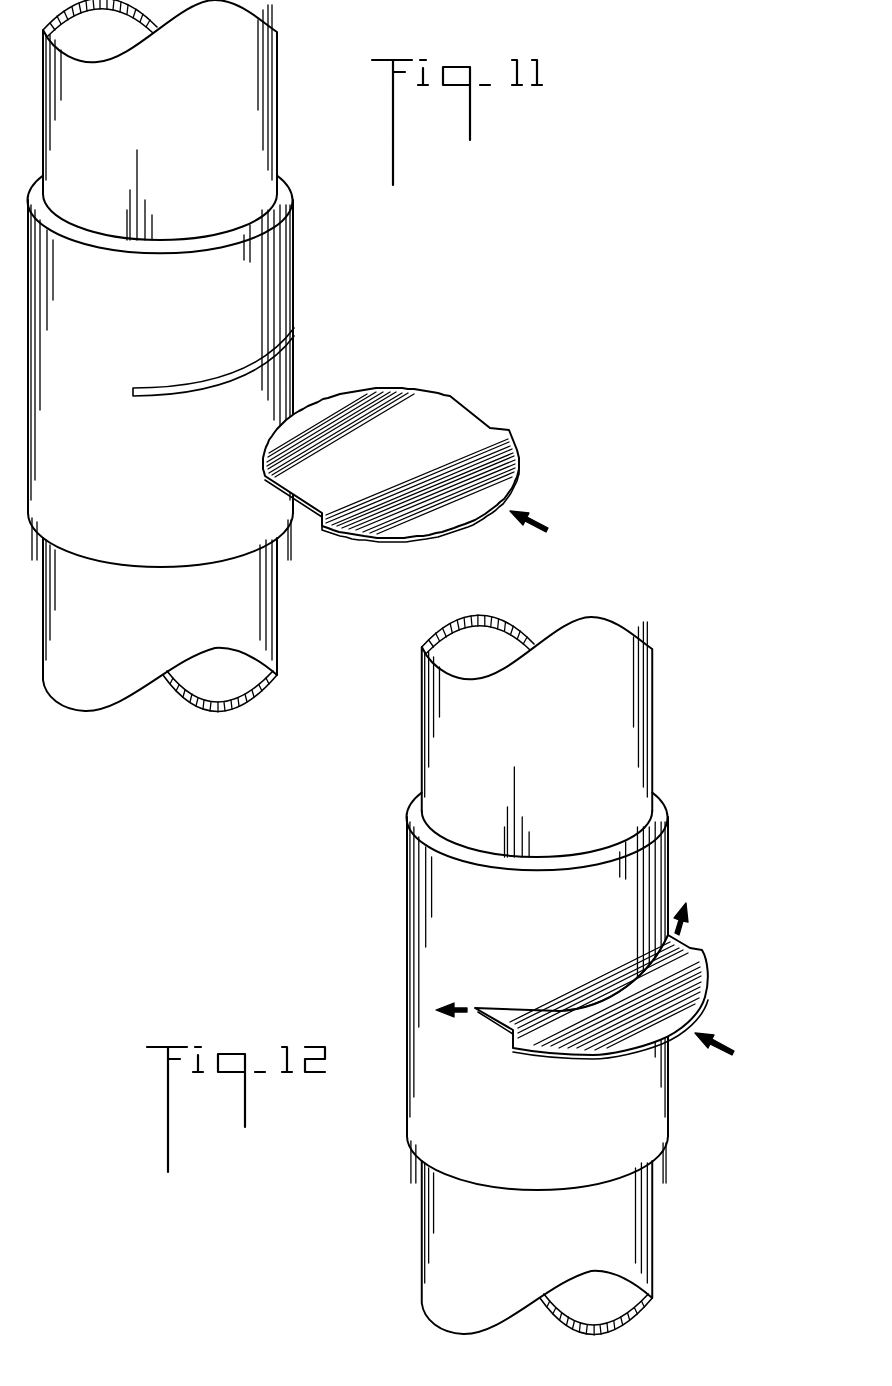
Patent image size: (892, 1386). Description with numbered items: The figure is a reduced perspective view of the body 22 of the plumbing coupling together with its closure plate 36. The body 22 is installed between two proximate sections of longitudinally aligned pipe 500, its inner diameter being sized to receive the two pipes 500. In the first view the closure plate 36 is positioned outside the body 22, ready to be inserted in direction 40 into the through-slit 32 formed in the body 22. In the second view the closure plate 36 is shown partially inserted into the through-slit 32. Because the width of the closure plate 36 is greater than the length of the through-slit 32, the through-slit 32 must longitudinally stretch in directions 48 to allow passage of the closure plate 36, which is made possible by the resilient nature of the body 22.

In FIG. 11, the pipe 500 is at (278, 122).
In FIG. 12, the pipe 500 is at (652, 745).
In FIG. 11, the body 22 is at (327, 280).
In FIG. 12, the body 22 is at (700, 826).
In FIG. 11, the through-slit 32 is at (248, 378).
In FIG. 12, the through-slit 32 is at (525, 1013).
In FIG. 11, the closure plate 36 is at (433, 440).
In FIG. 12, the closure plate 36 is at (688, 993).
In FIG. 11, the direction 40 is at (549, 528).
In FIG. 12, the direction 40 is at (733, 1050).
In FIG. 12, the directions 48 is at (450, 1018).